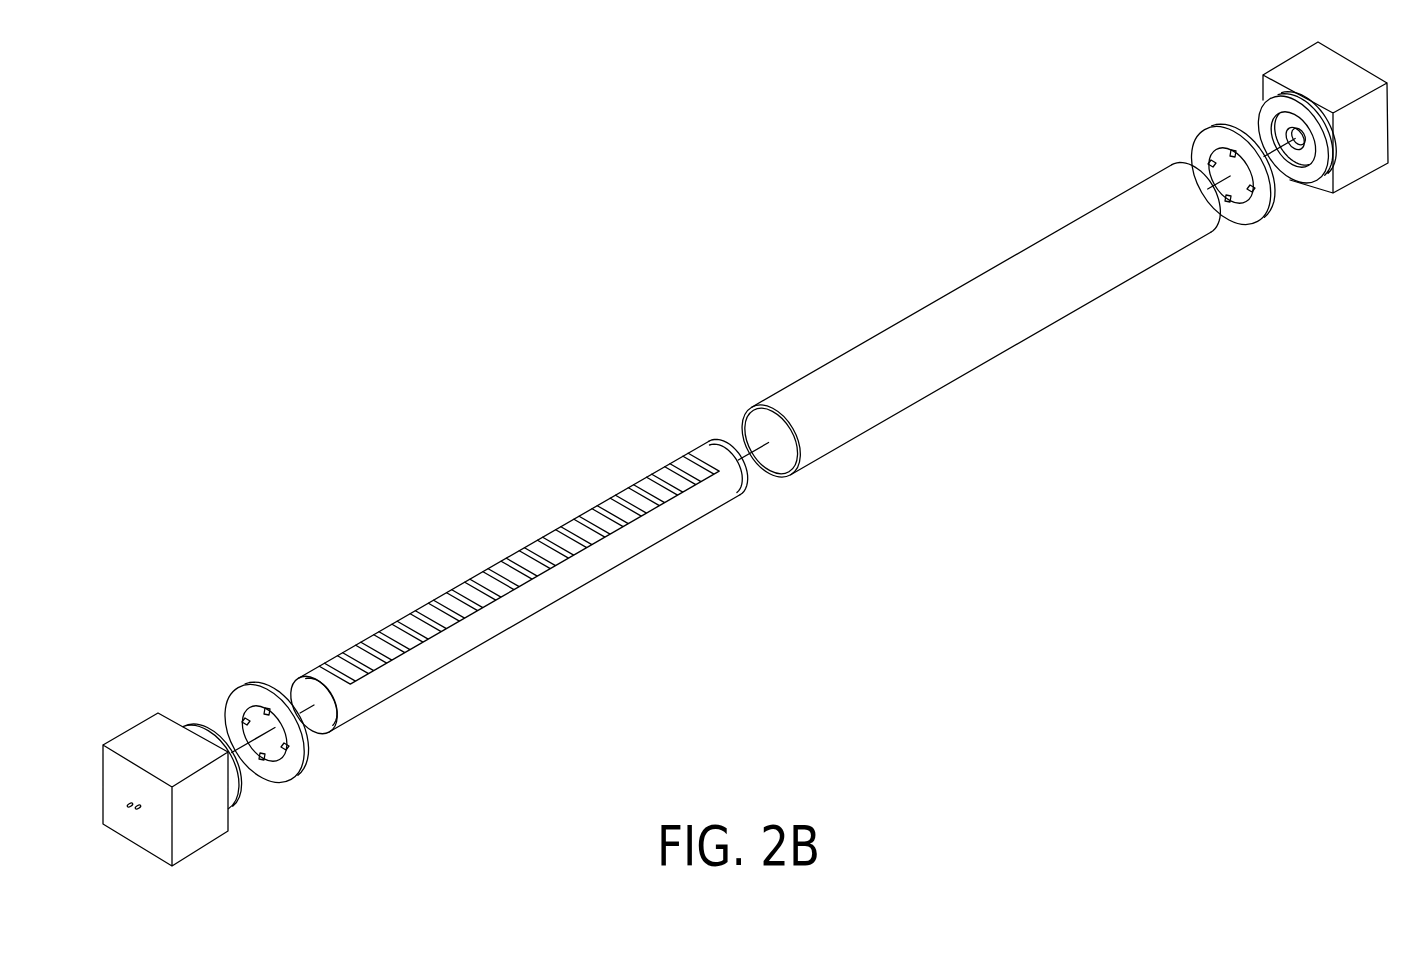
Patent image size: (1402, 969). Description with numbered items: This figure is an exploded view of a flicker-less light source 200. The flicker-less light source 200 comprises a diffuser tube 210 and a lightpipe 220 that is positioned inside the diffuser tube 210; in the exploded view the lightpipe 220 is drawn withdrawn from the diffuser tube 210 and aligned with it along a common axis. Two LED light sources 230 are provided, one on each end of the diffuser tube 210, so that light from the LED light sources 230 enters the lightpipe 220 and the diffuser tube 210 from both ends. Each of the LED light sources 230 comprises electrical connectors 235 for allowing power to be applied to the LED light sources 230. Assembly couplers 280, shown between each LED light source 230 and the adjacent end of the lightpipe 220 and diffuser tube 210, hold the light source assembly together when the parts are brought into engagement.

The flicker-less light source 200 is at (685, 363).
The diffuser tube 210 is at (943, 357).
The lightpipe 220 is at (437, 655).
The LED light source 230 is at (182, 833).
The electrical connectors 235 is at (137, 810).
The assembly couplers 280 is at (293, 770).